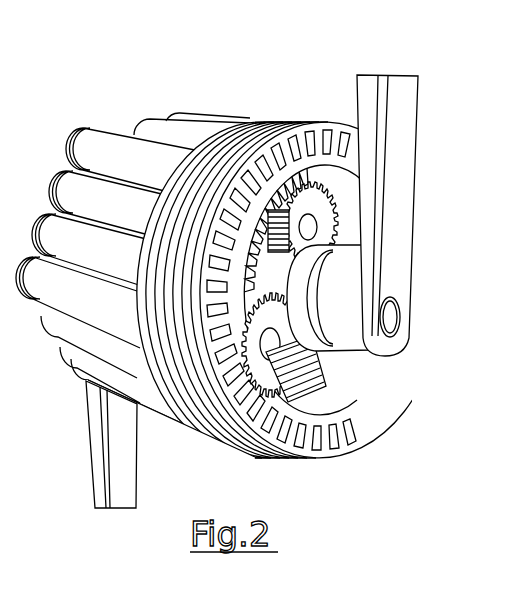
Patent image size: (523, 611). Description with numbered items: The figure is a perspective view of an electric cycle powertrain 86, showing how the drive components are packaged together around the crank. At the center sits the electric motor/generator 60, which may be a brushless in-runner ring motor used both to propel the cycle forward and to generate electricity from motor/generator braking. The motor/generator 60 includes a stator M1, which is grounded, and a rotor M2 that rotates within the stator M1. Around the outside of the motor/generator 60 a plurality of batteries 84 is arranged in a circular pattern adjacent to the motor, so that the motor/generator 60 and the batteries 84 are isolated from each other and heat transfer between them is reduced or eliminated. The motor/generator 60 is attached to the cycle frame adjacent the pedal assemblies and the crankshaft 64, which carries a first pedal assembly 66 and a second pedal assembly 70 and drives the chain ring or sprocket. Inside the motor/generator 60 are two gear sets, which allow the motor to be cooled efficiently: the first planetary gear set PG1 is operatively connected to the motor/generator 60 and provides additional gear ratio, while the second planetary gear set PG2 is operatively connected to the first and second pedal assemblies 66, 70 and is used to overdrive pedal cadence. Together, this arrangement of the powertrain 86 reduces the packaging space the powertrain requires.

The battery assemblies 84 is at (116, 123).
The stator M1 is at (253, 118).
The rotor M2 is at (327, 172).
The electric motor/generator 60 is at (304, 122).
The first pedal assembly 66 is at (396, 198).
The crankshaft 64 is at (392, 313).
The electronic cycle powertrain 86 is at (267, 369).
The first planetary gear set PG1 is at (243, 345).
The second planetary gear set PG2 is at (290, 372).
The second pedal assembly 70 is at (118, 445).